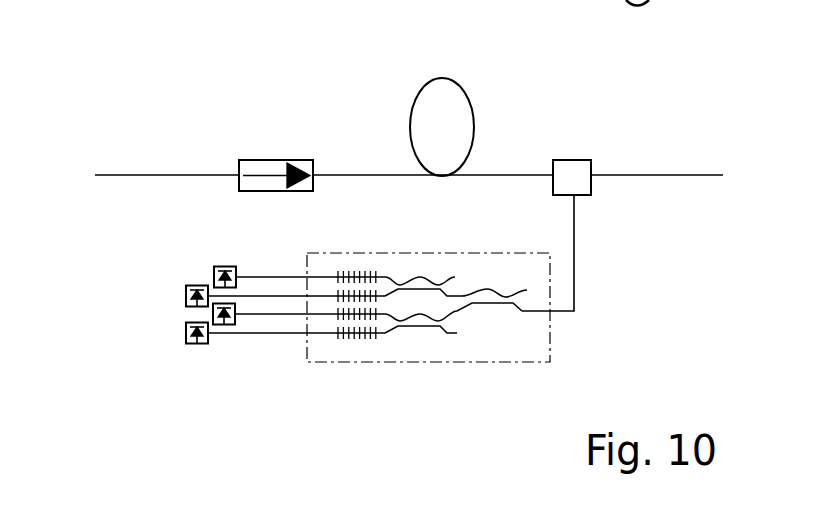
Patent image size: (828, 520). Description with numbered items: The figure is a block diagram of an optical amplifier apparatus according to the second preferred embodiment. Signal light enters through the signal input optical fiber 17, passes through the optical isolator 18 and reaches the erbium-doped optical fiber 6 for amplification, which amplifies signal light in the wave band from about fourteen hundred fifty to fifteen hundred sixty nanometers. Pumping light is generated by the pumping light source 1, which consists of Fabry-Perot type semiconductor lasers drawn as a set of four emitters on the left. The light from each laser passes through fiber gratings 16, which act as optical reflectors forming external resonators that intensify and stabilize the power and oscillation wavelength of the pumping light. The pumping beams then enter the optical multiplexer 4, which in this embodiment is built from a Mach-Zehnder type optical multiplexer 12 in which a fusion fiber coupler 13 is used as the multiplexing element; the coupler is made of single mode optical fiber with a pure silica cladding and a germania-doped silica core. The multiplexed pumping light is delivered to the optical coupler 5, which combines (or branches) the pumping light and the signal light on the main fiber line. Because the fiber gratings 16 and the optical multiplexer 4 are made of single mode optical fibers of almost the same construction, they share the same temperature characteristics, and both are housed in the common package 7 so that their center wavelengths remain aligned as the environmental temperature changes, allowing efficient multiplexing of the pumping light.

The pumping light source 1 is at (183, 348).
The optical multiplexer 4 is at (430, 307).
The optical coupler 5 is at (570, 160).
The erbium-doped optical fiber 6 is at (470, 97).
The package 7 is at (547, 330).
The Mach-Zehnder type optical multiplexer 12 is at (427, 242).
The fusion fiber coupler 13 is at (395, 290).
The fiber gratings 16 is at (337, 337).
The signal input optical fiber 17 is at (152, 175).
The optical isolator 18 is at (260, 160).